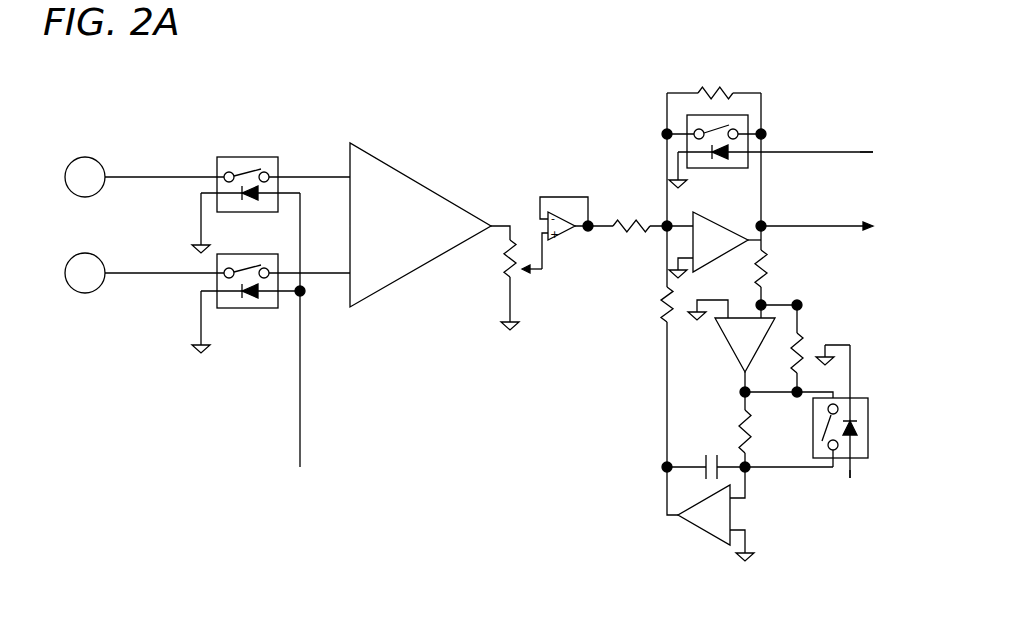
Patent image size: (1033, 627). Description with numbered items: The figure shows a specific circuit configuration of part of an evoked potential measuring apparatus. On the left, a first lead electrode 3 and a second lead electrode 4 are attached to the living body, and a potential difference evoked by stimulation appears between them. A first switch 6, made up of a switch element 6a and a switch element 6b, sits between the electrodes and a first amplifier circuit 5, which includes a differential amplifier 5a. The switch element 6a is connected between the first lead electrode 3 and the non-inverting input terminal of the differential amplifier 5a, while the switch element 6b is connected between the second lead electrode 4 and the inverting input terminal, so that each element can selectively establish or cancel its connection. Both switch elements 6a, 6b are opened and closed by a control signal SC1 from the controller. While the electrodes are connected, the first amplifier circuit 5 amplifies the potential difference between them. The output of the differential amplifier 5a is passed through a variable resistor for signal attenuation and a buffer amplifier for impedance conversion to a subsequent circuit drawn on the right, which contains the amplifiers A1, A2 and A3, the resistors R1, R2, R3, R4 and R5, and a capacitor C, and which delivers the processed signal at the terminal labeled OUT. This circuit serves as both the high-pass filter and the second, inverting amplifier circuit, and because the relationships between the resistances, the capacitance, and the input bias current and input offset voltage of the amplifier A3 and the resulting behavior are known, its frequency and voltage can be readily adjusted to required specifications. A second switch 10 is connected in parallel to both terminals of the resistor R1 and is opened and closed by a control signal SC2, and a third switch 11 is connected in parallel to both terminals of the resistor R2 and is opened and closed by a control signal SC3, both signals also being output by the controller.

The first lead electrode 3 is at (85, 165).
The second lead electrode 4 is at (85, 283).
The first amplifier circuit 5 is at (400, 122).
The differential amplifier 5a is at (427, 185).
The first switch 6 is at (262, 229).
The switch element 6a is at (250, 157).
The switch element 6b is at (246, 308).
The second switch 10 is at (736, 168).
The third switch 11 is at (866, 396).
The resistor R1 is at (714, 79).
The resistor R2 is at (761, 429).
The resistor R3 is at (649, 304).
The resistor R4 is at (777, 268).
The resistor R5 is at (813, 344).
The capacitor C is at (750, 454).
The amplifier A1 is at (715, 232).
The amplifier A2 is at (731, 346).
The amplifier A3 is at (716, 517).
The control signal SC1 is at (297, 346).
The control signal SC2 is at (889, 153).
The control signal SC3 is at (849, 491).
The output terminal OUT is at (842, 227).